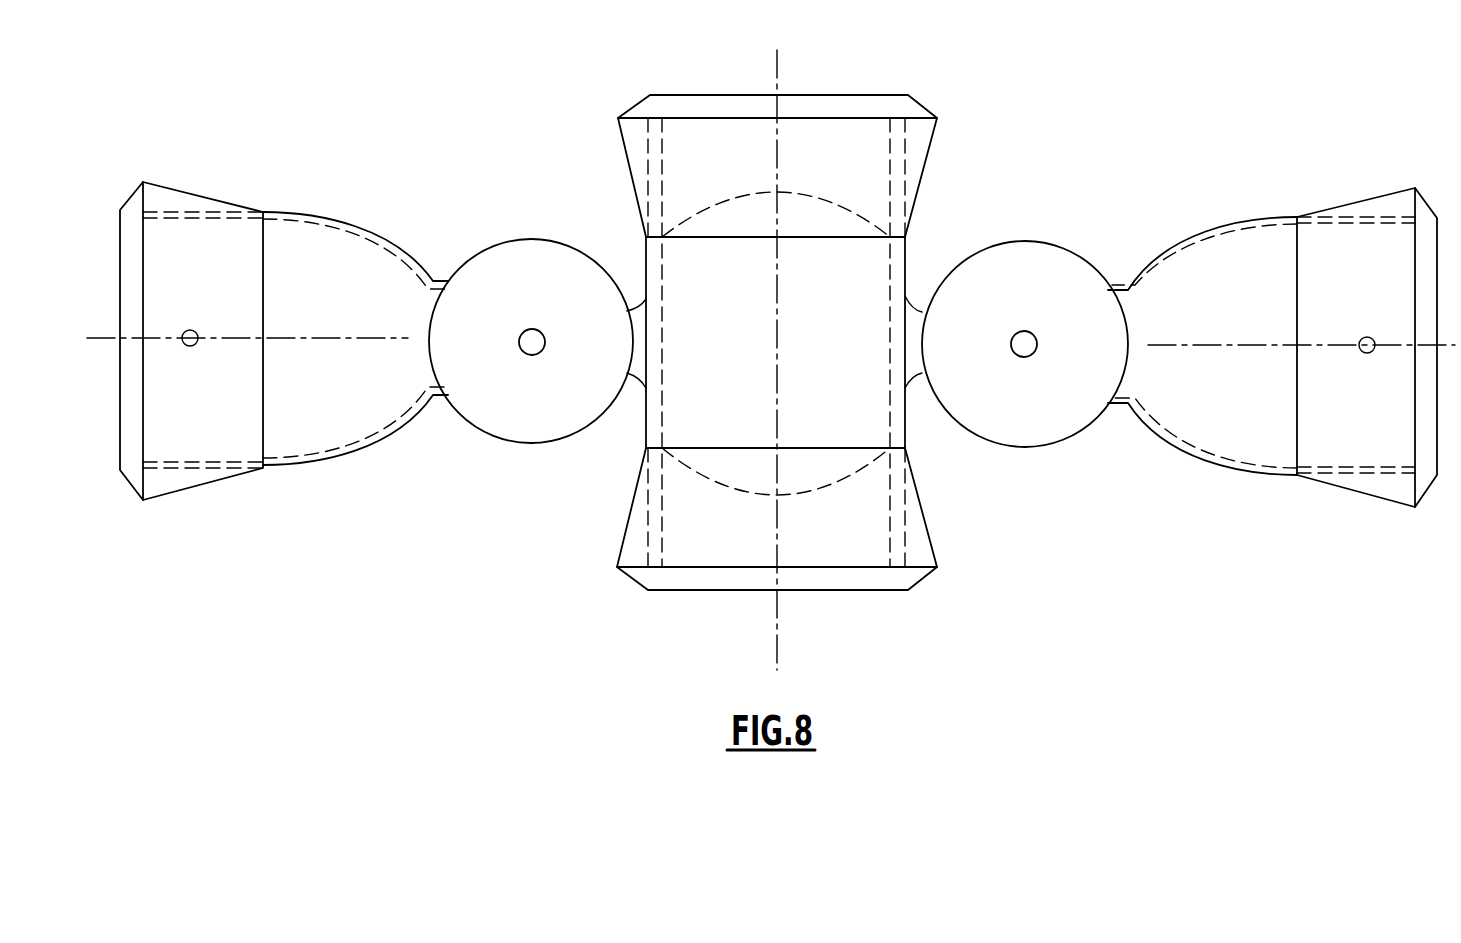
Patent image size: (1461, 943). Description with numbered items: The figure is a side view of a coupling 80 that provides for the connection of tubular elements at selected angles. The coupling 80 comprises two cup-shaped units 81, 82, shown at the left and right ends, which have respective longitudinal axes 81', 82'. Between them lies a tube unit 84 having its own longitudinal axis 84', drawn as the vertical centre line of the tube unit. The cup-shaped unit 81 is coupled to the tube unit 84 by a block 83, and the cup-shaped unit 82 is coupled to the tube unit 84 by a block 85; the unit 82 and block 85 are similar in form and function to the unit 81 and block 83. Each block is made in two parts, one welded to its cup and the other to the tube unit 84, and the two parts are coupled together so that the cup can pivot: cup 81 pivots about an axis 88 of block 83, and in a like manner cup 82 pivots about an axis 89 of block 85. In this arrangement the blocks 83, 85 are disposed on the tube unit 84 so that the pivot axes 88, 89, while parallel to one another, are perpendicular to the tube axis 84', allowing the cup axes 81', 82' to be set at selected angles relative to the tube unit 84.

The coupling 80 is at (771, 352).
The cup-shaped unit 81 is at (267, 341).
The longitudinal axis 81' is at (247, 313).
The cup-shaped unit 82 is at (1281, 355).
The longitudinal axis 82' is at (1301, 320).
The block 83 is at (537, 359).
The tube unit 84 is at (802, 352).
The longitudinal axis 84' is at (836, 352).
The block 85 is at (1016, 362).
The axis 88 is at (533, 329).
The axis 89 is at (1020, 338).